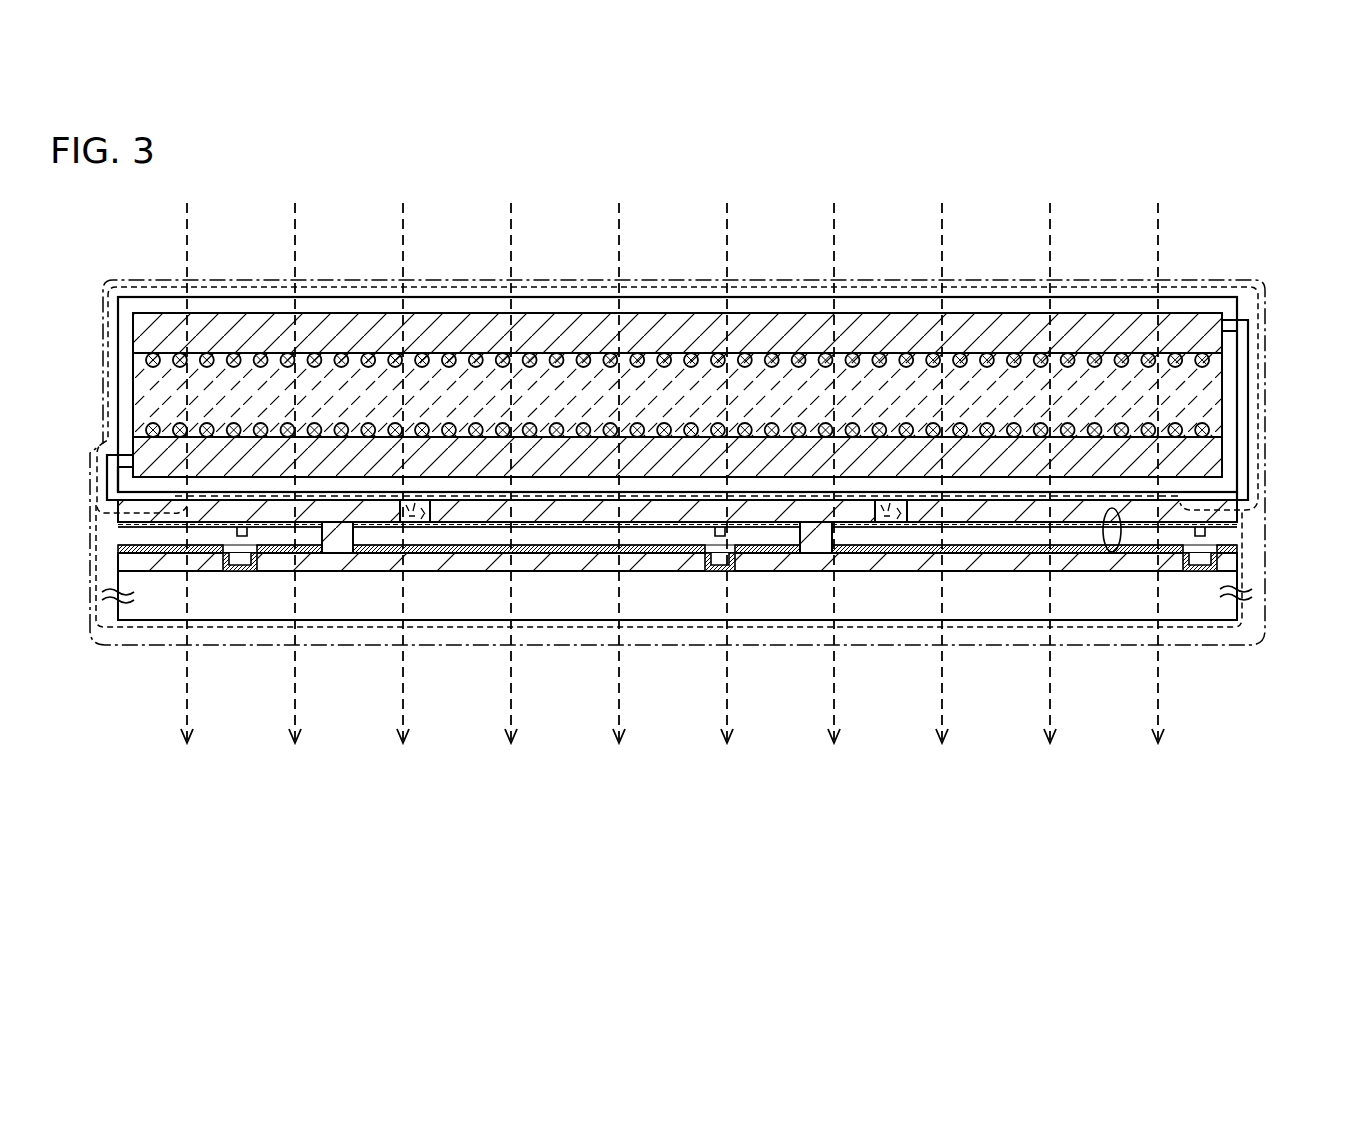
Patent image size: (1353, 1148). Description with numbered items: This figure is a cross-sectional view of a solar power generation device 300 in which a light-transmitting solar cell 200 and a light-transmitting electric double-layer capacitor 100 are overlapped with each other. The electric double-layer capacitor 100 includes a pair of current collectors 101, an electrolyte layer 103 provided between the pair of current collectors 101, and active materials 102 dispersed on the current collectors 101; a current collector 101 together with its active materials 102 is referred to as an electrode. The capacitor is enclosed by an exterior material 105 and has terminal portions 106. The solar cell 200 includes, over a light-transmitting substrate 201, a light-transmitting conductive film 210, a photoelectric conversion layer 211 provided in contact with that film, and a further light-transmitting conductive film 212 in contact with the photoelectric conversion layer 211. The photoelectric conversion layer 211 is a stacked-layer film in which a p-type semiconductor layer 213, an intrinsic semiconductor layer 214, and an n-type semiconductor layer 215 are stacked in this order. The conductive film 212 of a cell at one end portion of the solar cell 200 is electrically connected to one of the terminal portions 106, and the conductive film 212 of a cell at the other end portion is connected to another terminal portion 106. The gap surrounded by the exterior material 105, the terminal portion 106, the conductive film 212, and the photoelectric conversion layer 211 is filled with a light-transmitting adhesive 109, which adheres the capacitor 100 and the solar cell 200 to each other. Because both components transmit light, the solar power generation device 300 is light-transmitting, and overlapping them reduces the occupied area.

The electric double-layer capacitor 100 is at (458, 284).
The current collector 101 is at (893, 318).
The active materials 102 is at (770, 356).
The electrolyte layer 103 is at (650, 378).
The exterior material 105 is at (1000, 300).
The terminal portion 106 is at (117, 470).
The light-transmitting adhesive 109 is at (890, 512).
The solar cell 200 is at (143, 628).
The light-transmitting substrate 201 is at (238, 608).
The light-transmitting conductive film 210 is at (683, 562).
The photoelectric conversion layer 211 is at (1112, 552).
The light-transmitting conductive film 212 is at (337, 540).
The p-type semiconductor layer 213 is at (548, 536).
The intrinsic semiconductor layer 214 is at (565, 522).
The n-type semiconductor layer 215 is at (574, 548).
The solar power generation device 300 is at (1207, 646).